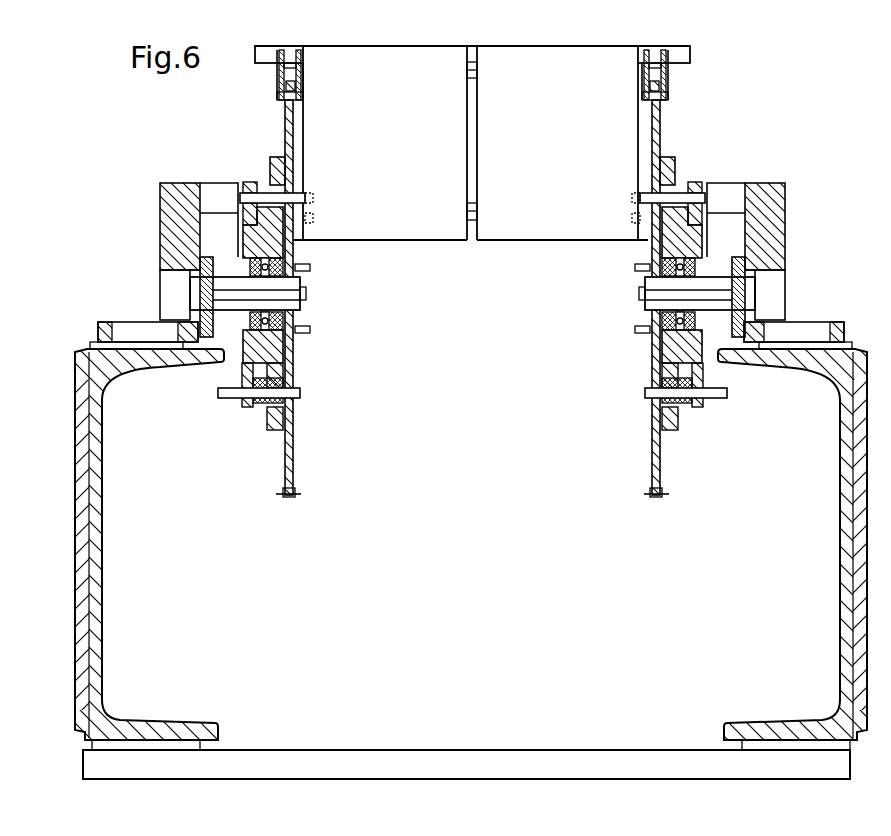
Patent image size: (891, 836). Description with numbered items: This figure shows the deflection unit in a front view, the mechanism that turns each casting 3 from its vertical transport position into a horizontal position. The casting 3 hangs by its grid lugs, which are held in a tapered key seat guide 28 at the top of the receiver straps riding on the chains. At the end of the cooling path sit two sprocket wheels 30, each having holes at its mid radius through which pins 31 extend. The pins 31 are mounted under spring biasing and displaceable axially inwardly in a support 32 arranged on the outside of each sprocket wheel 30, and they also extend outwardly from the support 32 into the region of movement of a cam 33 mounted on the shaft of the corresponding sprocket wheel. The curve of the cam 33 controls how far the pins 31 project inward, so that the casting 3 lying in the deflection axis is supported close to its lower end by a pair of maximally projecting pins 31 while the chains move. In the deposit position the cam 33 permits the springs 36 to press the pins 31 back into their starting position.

The casting 3 is at (427, 70).
The key seat guide 28 is at (297, 52).
The sprocket wheel 30 is at (285, 110).
The pin 31 is at (243, 200).
The support 32 is at (272, 160).
The cam 33 is at (215, 240).
The spring 36 is at (258, 186).